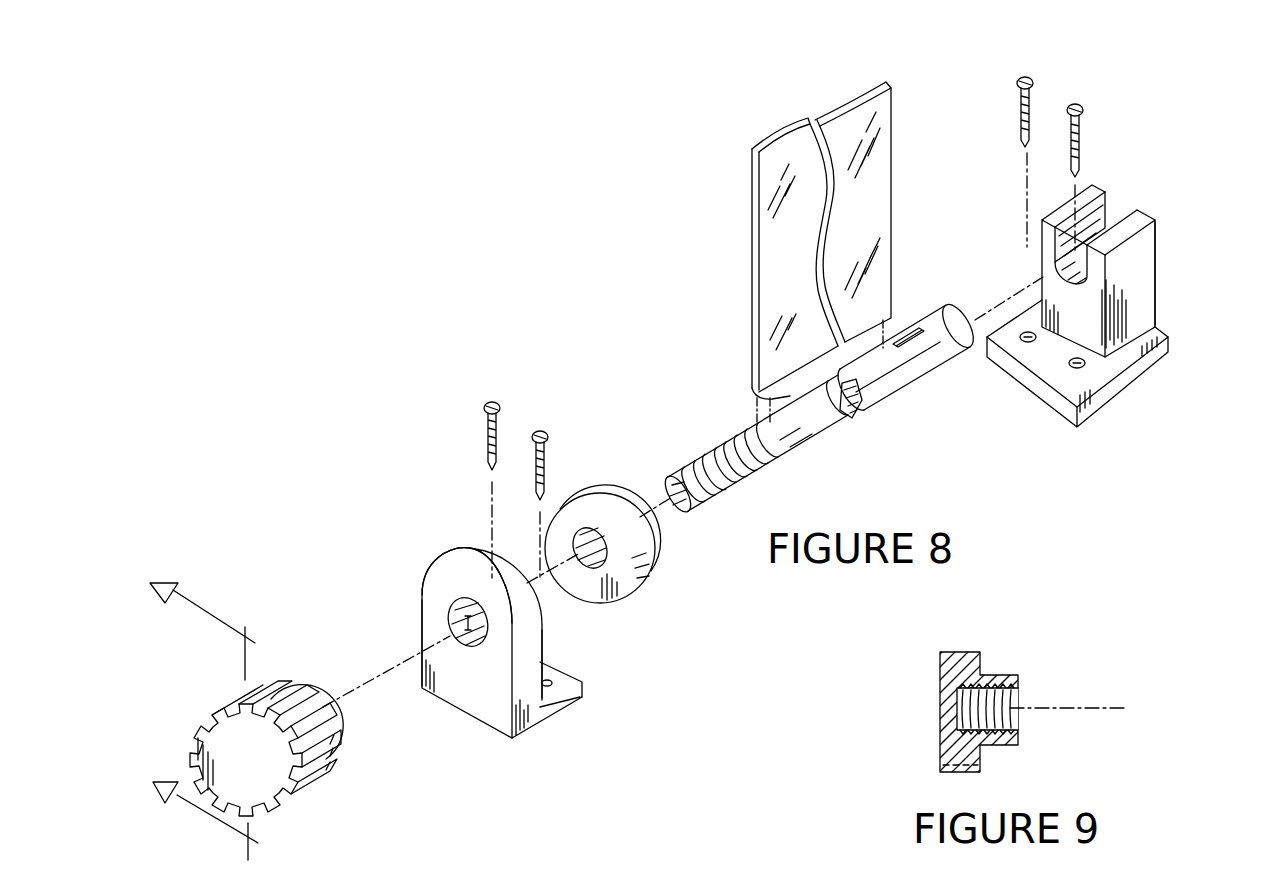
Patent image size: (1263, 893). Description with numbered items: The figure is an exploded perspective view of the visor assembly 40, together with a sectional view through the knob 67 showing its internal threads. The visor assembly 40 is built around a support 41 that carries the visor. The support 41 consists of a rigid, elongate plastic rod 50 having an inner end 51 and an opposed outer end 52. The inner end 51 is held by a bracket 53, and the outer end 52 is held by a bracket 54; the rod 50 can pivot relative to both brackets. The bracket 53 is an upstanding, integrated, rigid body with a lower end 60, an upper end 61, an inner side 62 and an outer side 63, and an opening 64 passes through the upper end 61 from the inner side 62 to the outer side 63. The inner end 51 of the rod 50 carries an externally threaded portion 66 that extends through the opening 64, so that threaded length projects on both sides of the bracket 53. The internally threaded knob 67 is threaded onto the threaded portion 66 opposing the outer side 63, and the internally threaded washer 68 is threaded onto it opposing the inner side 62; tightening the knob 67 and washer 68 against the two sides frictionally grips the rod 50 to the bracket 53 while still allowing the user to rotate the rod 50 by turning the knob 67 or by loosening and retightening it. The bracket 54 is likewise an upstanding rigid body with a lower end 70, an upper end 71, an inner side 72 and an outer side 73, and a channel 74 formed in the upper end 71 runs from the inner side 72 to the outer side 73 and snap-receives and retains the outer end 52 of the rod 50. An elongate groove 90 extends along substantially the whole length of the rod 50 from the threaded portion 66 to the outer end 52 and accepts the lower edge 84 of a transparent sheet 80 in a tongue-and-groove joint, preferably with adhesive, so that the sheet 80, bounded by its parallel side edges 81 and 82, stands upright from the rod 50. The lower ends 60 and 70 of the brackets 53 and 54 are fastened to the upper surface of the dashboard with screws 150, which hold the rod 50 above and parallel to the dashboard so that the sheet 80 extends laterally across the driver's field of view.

In FIG. 8, the visor assembly 40 is at (593, 232).
In FIG. 8, the support 41 is at (751, 269).
In FIG. 8, the rod 50 is at (819, 400).
In FIG. 8, the inner end 51 is at (790, 455).
In FIG. 8, the outer end 52 is at (940, 320).
In FIG. 8, the bracket 53 is at (479, 653).
In FIG. 8, the bracket 54 is at (1107, 284).
In FIG. 8, the lower end 60 is at (560, 705).
In FIG. 8, the upper end 61 is at (440, 580).
In FIG. 8, the inner side 62 is at (544, 632).
In FIG. 8, the outer side 63 is at (432, 603).
In FIG. 8, the opening 64 is at (450, 636).
In FIG. 8, the threaded portion 66 is at (742, 485).
In FIG. 8, the knob 67 is at (212, 742).
In FIG. 9, the knob 67 is at (970, 670).
In FIG. 8, the washer 68 is at (620, 583).
In FIG. 8, the lower end 70 is at (1083, 363).
In FIG. 8, the upper end 71 is at (1143, 240).
In FIG. 8, the inner side 72 is at (1073, 307).
In FIG. 8, the outer side 73 is at (1157, 262).
In FIG. 8, the channel 74 is at (1097, 222).
In FIG. 8, the sheet 80 is at (815, 243).
In FIG. 8, the side edge 81 is at (752, 203).
In FIG. 8, the side edge 82 is at (893, 160).
In FIG. 8, the lower edge 84 is at (775, 396).
In FIG. 8, the groove 90 is at (880, 363).
In FIG. 8, the screws 150 is at (548, 445).